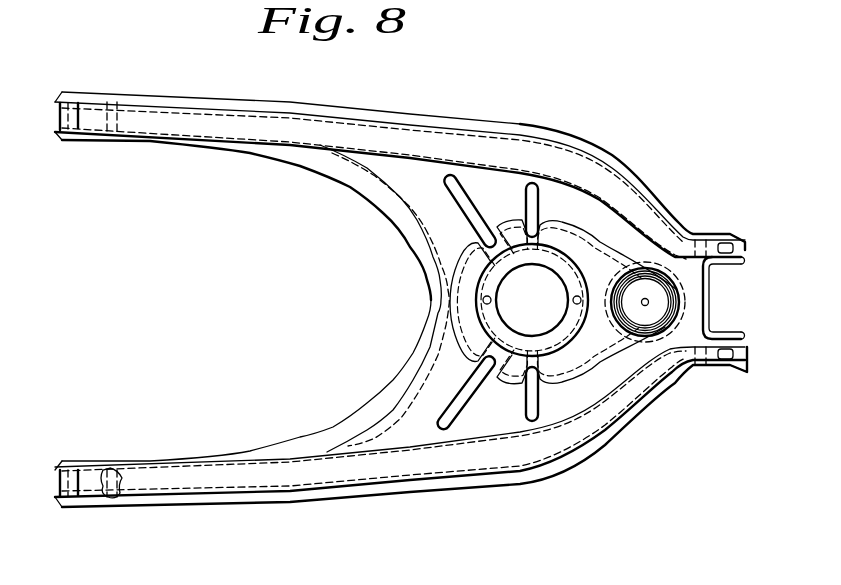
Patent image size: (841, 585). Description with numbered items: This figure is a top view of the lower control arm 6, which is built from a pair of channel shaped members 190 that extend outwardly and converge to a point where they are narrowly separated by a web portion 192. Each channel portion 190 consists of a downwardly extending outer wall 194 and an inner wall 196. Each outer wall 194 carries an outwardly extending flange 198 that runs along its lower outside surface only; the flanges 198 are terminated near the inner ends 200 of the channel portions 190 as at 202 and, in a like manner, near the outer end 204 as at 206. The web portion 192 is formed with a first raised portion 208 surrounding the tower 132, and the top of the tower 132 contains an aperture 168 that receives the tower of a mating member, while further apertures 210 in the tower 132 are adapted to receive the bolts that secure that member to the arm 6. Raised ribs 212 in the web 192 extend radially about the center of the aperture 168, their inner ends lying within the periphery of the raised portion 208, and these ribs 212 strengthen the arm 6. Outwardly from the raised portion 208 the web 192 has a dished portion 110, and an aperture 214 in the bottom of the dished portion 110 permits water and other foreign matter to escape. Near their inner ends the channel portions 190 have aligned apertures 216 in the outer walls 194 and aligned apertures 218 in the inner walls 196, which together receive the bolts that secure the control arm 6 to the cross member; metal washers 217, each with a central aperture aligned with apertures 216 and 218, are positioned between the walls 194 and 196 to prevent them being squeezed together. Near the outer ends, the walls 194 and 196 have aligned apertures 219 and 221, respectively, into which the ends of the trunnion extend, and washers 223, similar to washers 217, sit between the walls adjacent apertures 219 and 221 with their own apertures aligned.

The lower control arm 6 is at (582, 481).
The dished portion 110 is at (650, 320).
The tower 132 is at (493, 268).
The aperture 168 is at (560, 283).
The channel shaped members 190 is at (265, 114).
The web portion 192 is at (710, 305).
The outer walls 194 is at (140, 108).
The inner walls 196 is at (150, 134).
The flange 198 is at (325, 105).
The inner ends 200 is at (55, 128).
The flange termination 202 is at (57, 103).
The outer end 204 is at (745, 242).
The flange termination 206 is at (728, 234).
The first raised portion 208 is at (442, 310).
The apertures 210 is at (491, 299).
The raised ribs 212 is at (457, 195).
The aperture 214 is at (650, 302).
The aligned apertures 216 is at (100, 103).
The metal washers 217 is at (57, 119).
The aligned apertures 218 is at (123, 130).
The apertures 219 is at (707, 238).
The apertures 221 is at (695, 238).
The washers 223 is at (733, 249).